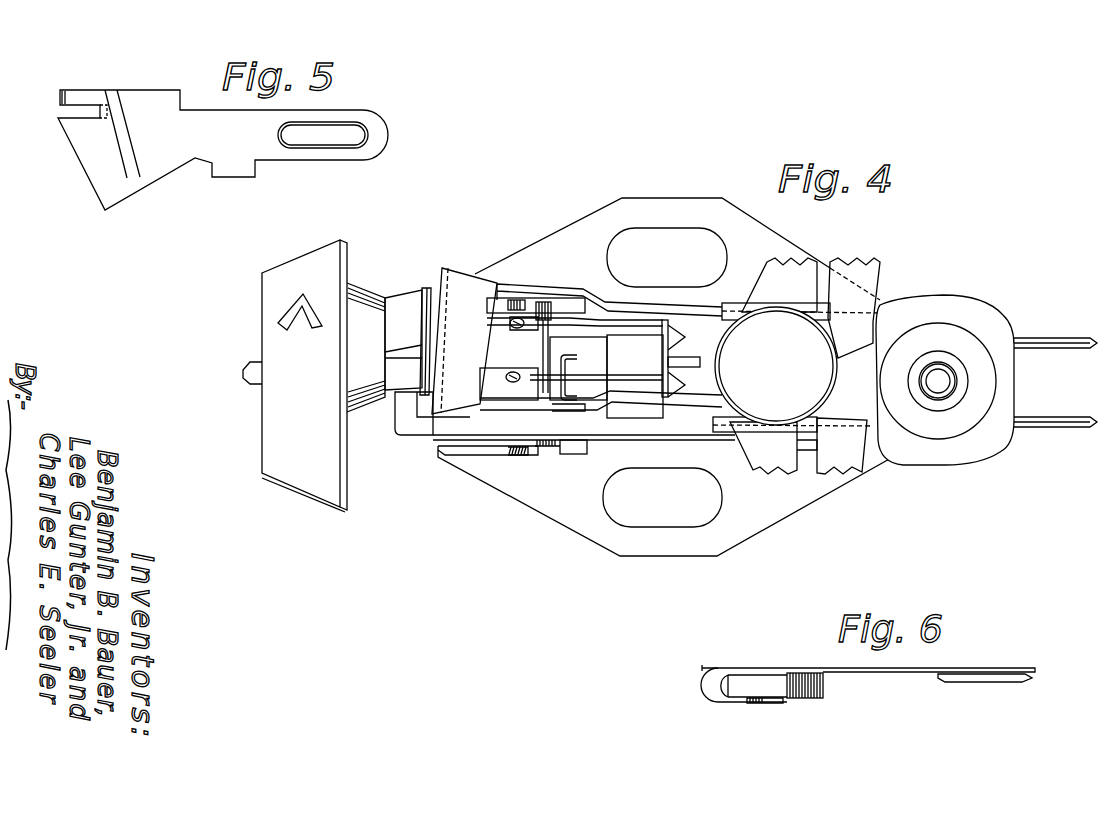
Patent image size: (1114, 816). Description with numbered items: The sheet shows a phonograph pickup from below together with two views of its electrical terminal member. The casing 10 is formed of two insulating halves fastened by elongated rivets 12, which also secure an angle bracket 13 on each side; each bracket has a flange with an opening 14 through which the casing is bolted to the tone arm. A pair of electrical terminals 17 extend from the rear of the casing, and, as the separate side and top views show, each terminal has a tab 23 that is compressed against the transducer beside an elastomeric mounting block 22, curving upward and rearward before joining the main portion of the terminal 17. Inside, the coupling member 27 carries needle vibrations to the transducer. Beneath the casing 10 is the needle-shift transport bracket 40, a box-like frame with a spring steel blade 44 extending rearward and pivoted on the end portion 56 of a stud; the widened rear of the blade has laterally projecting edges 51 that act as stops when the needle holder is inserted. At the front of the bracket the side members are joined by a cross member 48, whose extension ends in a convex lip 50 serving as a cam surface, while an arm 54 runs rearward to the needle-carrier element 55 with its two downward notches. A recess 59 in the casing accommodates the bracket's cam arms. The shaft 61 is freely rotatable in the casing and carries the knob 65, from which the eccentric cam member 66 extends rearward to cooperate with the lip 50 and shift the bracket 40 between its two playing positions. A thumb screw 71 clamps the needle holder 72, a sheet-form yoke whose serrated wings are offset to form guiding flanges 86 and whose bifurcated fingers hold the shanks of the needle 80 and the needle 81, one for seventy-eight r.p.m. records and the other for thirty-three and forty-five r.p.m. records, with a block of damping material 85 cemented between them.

In FIG. 4, the casing 10 is at (488, 425).
In FIG. 4, the elongated rivets 12 is at (500, 455).
In FIG. 4, the angle bracket 13 is at (686, 205).
In FIG. 4, the opening 14 is at (637, 238).
In FIG. 5, the electrical terminal 17 is at (278, 118).
In FIG. 6, the electrical terminal 17 is at (917, 669).
In FIG. 4, the electrical terminal 17 is at (1035, 340).
In FIG. 6, the mounting block 22 is at (808, 699).
In FIG. 5, the tab 23 is at (127, 176).
In FIG. 6, the tab 23 is at (737, 704).
In FIG. 4, the coupling member 27 is at (571, 368).
In FIG. 4, the needle-shift transport bracket 40 is at (553, 420).
In FIG. 4, the spring steel blade 44 is at (980, 452).
In FIG. 4, the cross member 48 is at (457, 290).
In FIG. 4, the lip 50 is at (430, 290).
In FIG. 4, the edges 51 is at (868, 300).
In FIG. 4, the arm 54 is at (502, 337).
In FIG. 4, the needle-carrier element 55 is at (550, 337).
In FIG. 4, the end portion of stud 56 is at (945, 401).
In FIG. 4, the recess 59 is at (428, 418).
In FIG. 4, the shaft 61 is at (243, 370).
In FIG. 4, the knob 65 is at (265, 318).
In FIG. 4, the cam member 66 is at (402, 305).
In FIG. 4, the thumb screw 71 is at (757, 318).
In FIG. 4, the needle holder 72 is at (770, 455).
In FIG. 4, the needle 80 is at (587, 388).
In FIG. 4, the needle 81 is at (583, 324).
In FIG. 4, the damping material block 85 is at (633, 365).
In FIG. 4, the flanges 86 is at (400, 412).